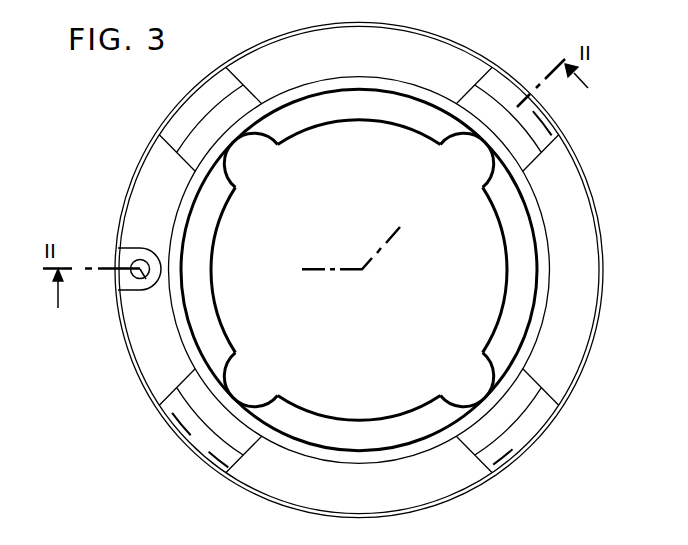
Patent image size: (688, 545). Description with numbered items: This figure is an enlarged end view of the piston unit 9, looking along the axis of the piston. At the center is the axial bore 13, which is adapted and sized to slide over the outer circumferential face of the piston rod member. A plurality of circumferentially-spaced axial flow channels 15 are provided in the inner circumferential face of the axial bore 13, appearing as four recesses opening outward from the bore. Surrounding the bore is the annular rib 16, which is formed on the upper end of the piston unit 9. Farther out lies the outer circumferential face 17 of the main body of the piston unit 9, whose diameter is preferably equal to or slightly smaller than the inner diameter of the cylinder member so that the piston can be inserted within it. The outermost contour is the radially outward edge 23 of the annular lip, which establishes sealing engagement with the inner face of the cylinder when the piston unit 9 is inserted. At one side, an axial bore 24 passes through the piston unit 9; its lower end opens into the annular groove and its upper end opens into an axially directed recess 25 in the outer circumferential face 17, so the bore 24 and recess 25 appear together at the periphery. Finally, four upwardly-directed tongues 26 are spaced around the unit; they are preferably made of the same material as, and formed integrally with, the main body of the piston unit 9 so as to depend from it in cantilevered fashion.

The piston unit 9 is at (152, 360).
The axial bore 13 is at (352, 125).
The axial flow channels 15 is at (238, 153).
The annular rib 16 is at (368, 81).
The outer circumferential face 17 is at (577, 177).
The radially outward edge 23 is at (605, 252).
The axial bore 24 is at (143, 290).
The axially directed recess 25 is at (122, 264).
The tongues 26 is at (190, 115).